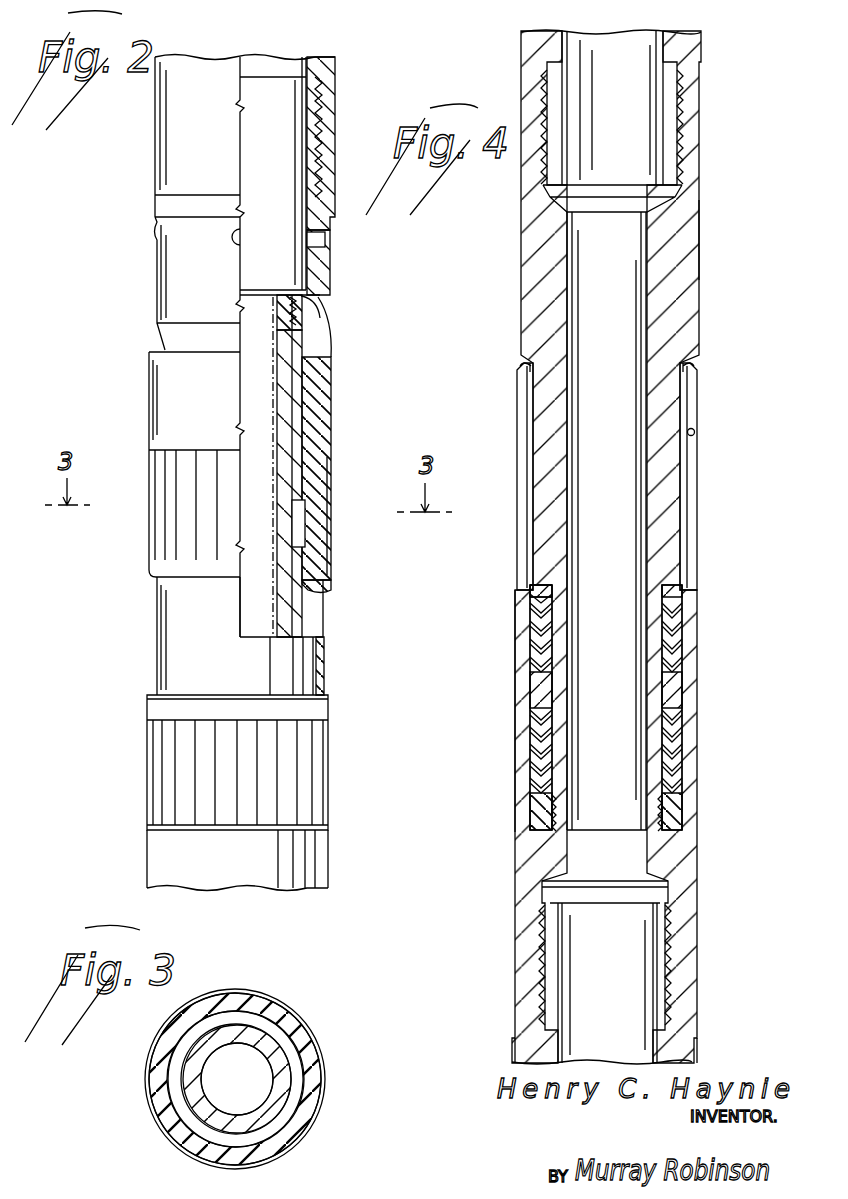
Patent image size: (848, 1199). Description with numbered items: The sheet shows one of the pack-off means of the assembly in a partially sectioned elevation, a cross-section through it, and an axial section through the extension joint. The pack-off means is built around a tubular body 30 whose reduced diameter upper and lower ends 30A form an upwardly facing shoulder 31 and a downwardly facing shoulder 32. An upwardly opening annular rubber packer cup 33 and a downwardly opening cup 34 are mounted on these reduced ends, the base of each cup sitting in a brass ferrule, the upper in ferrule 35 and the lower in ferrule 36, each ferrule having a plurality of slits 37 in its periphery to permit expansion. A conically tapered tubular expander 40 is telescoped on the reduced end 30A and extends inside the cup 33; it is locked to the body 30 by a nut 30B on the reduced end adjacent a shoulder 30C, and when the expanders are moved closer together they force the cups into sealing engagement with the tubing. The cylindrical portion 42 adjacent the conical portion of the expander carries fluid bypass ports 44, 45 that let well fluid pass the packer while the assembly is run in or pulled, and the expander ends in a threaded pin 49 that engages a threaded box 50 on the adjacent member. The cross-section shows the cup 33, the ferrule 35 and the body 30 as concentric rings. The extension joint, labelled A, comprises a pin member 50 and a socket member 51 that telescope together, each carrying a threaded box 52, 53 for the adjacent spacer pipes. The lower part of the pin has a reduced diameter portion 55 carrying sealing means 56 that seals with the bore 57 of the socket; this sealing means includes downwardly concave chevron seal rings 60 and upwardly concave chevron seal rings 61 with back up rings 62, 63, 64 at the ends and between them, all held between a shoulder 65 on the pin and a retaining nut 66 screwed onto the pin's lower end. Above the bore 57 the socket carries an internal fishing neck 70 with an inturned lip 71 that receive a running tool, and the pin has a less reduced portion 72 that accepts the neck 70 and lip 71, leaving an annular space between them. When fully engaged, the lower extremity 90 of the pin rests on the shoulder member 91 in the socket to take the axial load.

In FIG. 2, the tubular body 30 is at (325, 643).
In FIG. 3, the tubular body 30 is at (280, 1090).
In FIG. 2, the reduced upper and lower ends 30A is at (275, 297).
In FIG. 2, the nuts 30B is at (305, 305).
In FIG. 2, the shoulders 30C is at (318, 320).
In FIG. 2, the upwardly facing shoulder 31 is at (331, 590).
In FIG. 2, the downwardly facing shoulder 32 is at (325, 678).
In FIG. 2, the upwardly opening annular rubber packer cup 33 is at (333, 387).
In FIG. 3, the upwardly opening annular rubber packer cup 33 is at (300, 1032).
In FIG. 2, the downwardly opening annular rubber packer cup 34 is at (329, 853).
In FIG. 2, the upper ferrule 35 is at (151, 525).
In FIG. 3, the upper ferrule 35 is at (322, 1060).
In FIG. 2, the lower ferrule 36 is at (147, 698).
In FIG. 2, the slits 37 is at (165, 748).
In FIG. 2, the conically tapered tubular expander 40 is at (327, 338).
In FIG. 2, the cylindrical portion 42 is at (157, 249).
In FIG. 2, the fluid bypass port 44 is at (232, 237).
In FIG. 2, the fluid bypass port 45 is at (325, 240).
In FIG. 2, the threaded pin 49 is at (307, 147).
In FIG. 2, the pin member 50 is at (329, 110).
In FIG. 4, the pin member 50 is at (702, 291).
In FIG. 4, the socket member 51 is at (696, 856).
In FIG. 4, the threaded box 52 is at (700, 134).
In FIG. 4, the threaded box 53 is at (696, 979).
In FIG. 4, the reduced diameter portion 55 is at (647, 763).
In FIG. 4, the sealing means 56 is at (683, 721).
In FIG. 4, the bore 57 is at (684, 676).
In FIG. 4, the downwardly concave chevron seal rings 60 is at (683, 628).
In FIG. 4, the upwardly concave chevron seal rings 61 is at (683, 756).
In FIG. 4, the back up ring 62 is at (681, 798).
In FIG. 4, the back up ring 63 is at (540, 688).
In FIG. 4, the back up ring 64 is at (531, 607).
In FIG. 4, the shoulder 65 is at (690, 599).
In FIG. 4, the retaining nut 66 is at (670, 821).
In FIG. 4, the internal fishing neck 70 is at (697, 436).
In FIG. 4, the inturned lip 71 is at (692, 393).
In FIG. 4, the less reduced diameter portion 72 is at (665, 489).
In FIG. 4, the lower extremity of the pin 90 is at (566, 813).
In FIG. 4, the shoulder member 91 is at (647, 830).
In FIG. 4, the assembly A is at (702, 236).